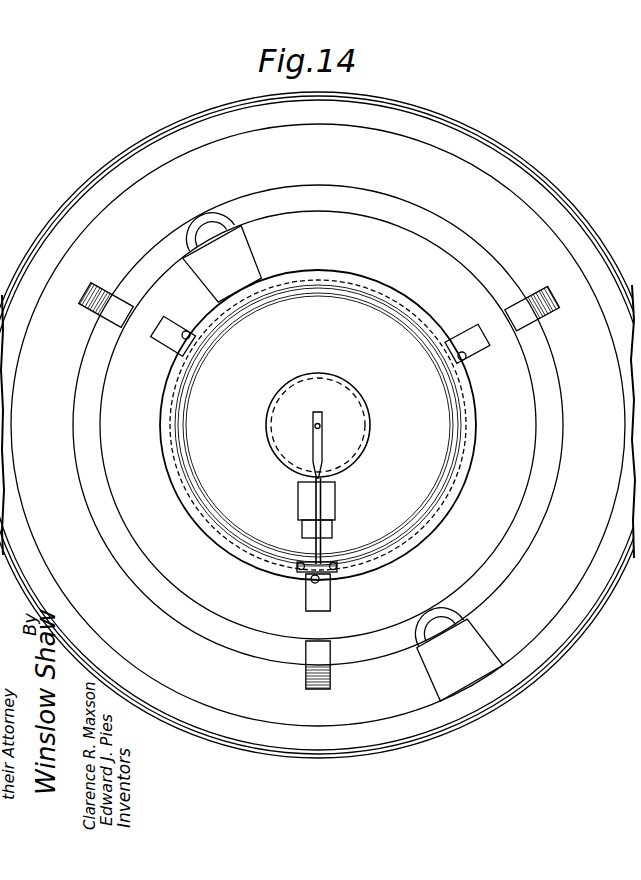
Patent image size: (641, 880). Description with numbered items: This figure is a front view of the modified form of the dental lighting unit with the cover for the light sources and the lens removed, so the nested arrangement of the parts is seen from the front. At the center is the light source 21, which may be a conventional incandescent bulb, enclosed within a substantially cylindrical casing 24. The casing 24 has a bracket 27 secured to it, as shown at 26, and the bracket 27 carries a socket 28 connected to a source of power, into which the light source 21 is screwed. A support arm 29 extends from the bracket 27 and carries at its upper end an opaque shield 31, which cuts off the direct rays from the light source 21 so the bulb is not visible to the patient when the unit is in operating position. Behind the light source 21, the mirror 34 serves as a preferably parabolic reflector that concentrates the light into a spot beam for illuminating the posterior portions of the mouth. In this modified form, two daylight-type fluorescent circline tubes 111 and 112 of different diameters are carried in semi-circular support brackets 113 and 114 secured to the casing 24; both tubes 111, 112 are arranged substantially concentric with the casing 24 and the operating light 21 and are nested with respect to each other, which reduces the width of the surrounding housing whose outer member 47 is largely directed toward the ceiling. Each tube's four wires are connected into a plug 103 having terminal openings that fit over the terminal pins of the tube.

The housing member 47 is at (457, 130).
The fluorescent circline tube 112 is at (354, 129).
The fluorescent circline tube 111 is at (384, 225).
The casing 24 is at (416, 548).
The mirror 34 is at (452, 430).
The opaque shield 31 is at (360, 430).
The light source 21 is at (352, 388).
The support arm 29 is at (322, 494).
The socket 28 is at (337, 513).
The bracket 27 is at (333, 527).
The securing point of bracket to casing 26 is at (331, 562).
The semi-circular support bracket 113 is at (329, 590).
The semi-circular support bracket 114 is at (329, 672).
The plug 103 is at (218, 226).